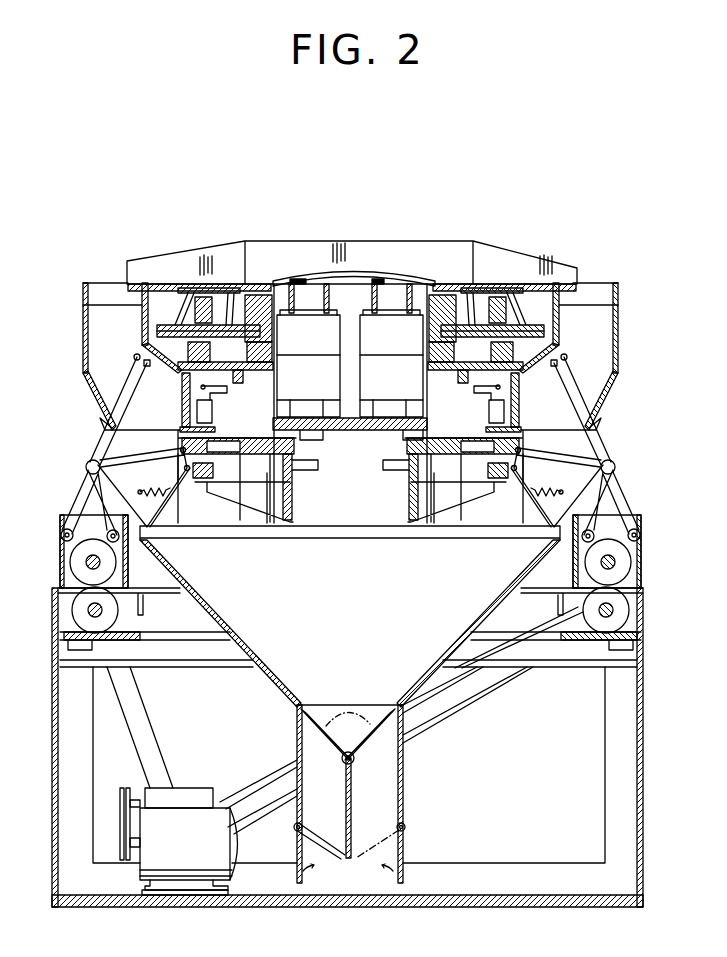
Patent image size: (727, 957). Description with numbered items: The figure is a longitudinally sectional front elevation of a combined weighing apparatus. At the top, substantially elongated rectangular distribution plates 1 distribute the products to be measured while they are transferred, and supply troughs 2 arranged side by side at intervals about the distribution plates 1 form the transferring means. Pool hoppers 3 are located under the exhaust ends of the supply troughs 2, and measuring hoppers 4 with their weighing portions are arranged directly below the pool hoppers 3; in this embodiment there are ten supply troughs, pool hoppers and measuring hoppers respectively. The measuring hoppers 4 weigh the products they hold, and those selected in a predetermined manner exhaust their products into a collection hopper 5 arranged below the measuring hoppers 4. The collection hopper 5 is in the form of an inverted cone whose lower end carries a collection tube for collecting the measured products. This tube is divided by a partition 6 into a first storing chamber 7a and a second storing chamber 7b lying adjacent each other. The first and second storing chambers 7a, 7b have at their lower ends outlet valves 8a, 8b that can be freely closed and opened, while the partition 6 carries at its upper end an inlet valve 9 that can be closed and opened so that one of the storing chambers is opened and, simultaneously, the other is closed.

The distribution plate 1 is at (340, 266).
The supply trough 2 is at (187, 280).
The pool hopper 3 is at (83, 328).
The measuring hopper 4 is at (108, 443).
The collection hopper 5 is at (283, 692).
The partition 6 is at (343, 853).
The first storing chamber 7a is at (331, 801).
The second storing chamber 7b is at (384, 801).
The outlet valve 8a is at (312, 843).
The outlet valve 8b is at (404, 838).
The inlet valve 9 is at (380, 716).